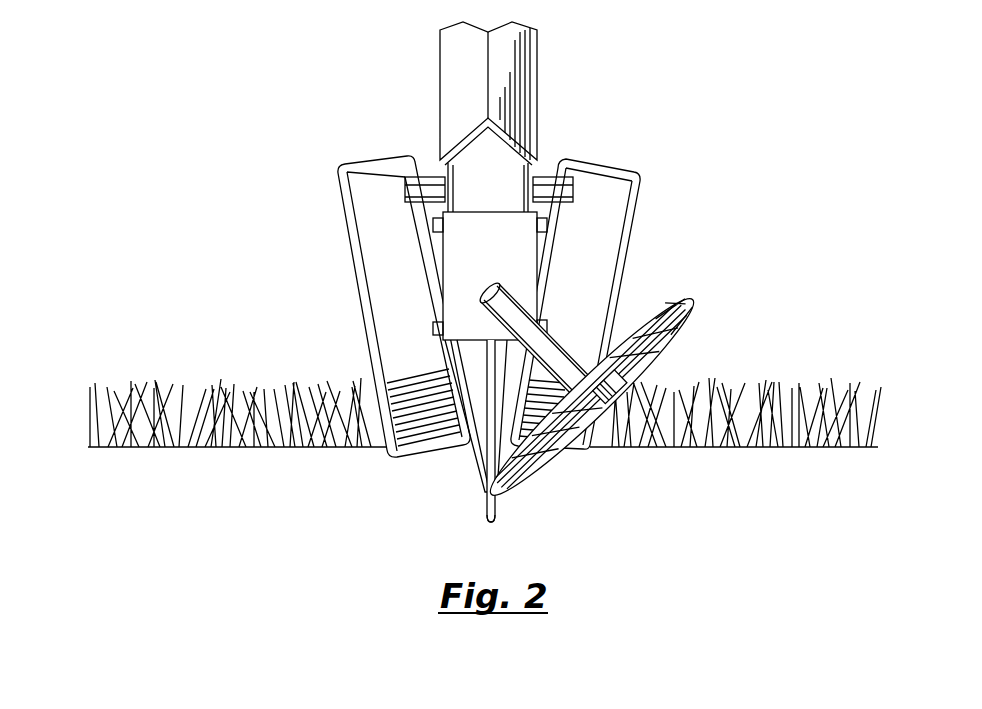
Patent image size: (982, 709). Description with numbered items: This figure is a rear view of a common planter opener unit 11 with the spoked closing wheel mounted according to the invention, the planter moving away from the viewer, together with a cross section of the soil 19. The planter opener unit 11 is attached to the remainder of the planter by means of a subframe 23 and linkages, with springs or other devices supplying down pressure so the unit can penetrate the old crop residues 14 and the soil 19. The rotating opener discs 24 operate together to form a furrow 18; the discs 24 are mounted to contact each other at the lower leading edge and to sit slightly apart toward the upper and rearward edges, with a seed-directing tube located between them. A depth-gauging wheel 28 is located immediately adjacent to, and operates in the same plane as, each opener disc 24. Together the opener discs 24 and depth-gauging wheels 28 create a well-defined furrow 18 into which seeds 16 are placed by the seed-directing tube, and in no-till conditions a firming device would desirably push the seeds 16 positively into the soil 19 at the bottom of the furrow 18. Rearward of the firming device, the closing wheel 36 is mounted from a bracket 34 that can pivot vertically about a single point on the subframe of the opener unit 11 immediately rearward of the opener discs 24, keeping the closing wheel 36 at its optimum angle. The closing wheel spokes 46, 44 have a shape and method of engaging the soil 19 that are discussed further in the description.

The planter opener unit 11 is at (300, 210).
The old crop residues 14 is at (221, 366).
The seeds 16 is at (497, 517).
The furrow 18 is at (485, 477).
The soil 19 is at (762, 462).
The subframe 23 is at (513, 68).
The opener discs 24 is at (480, 463).
The depth-gauging wheel 28 is at (380, 187).
The closing wheel bracket 34 is at (550, 347).
The closing wheel 36 is at (656, 303).
The closing wheel spoke 44 is at (542, 445).
The closing wheel spoke 46 is at (684, 332).